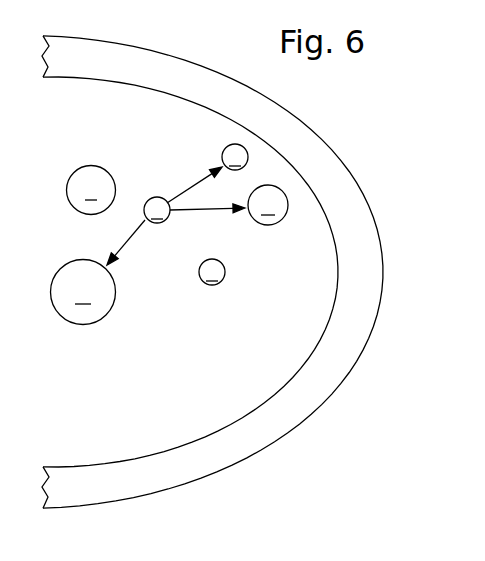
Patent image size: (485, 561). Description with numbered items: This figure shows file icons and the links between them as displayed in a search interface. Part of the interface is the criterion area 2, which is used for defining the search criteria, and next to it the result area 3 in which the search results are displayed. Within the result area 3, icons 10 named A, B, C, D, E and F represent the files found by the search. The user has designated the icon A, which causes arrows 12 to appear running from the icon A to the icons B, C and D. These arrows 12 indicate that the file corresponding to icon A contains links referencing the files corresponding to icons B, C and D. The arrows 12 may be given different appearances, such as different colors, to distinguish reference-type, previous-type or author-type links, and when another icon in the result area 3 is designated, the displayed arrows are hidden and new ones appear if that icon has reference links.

The criterion area 2 is at (59, 456).
The result area 3 is at (59, 500).
The icons 10 is at (223, 153).
The arrows 12 is at (190, 196).